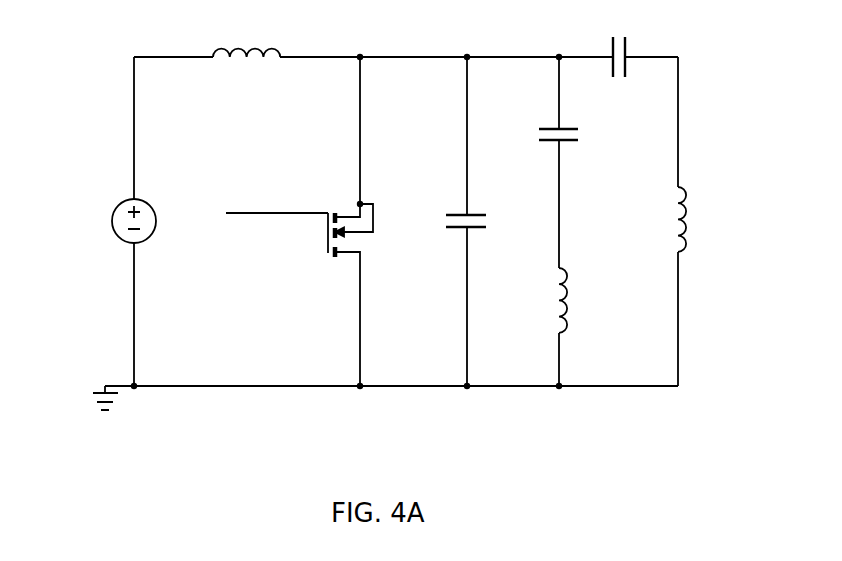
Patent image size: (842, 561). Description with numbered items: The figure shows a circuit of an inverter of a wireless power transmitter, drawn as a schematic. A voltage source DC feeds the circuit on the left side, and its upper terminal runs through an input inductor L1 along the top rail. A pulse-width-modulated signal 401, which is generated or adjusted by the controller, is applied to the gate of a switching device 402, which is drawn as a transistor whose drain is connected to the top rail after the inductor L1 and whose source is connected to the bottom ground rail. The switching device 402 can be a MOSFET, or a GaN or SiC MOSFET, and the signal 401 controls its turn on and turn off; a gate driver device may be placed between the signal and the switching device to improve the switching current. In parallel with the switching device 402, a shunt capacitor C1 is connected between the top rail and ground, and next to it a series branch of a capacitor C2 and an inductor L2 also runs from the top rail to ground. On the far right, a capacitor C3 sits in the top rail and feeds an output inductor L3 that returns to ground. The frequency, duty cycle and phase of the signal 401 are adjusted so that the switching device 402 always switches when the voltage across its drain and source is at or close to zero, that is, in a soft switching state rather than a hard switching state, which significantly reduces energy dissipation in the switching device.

The PWM signal 401 is at (260, 232).
The switching device 402 is at (376, 242).
The input inductor L1 is at (246, 30).
The shunt capacitor C1 is at (485, 226).
The series capacitor C2 is at (578, 139).
The series inductor L2 is at (586, 300).
The output capacitor C3 is at (620, 39).
The output inductor L3 is at (704, 219).
The DC voltage source DC is at (106, 221).